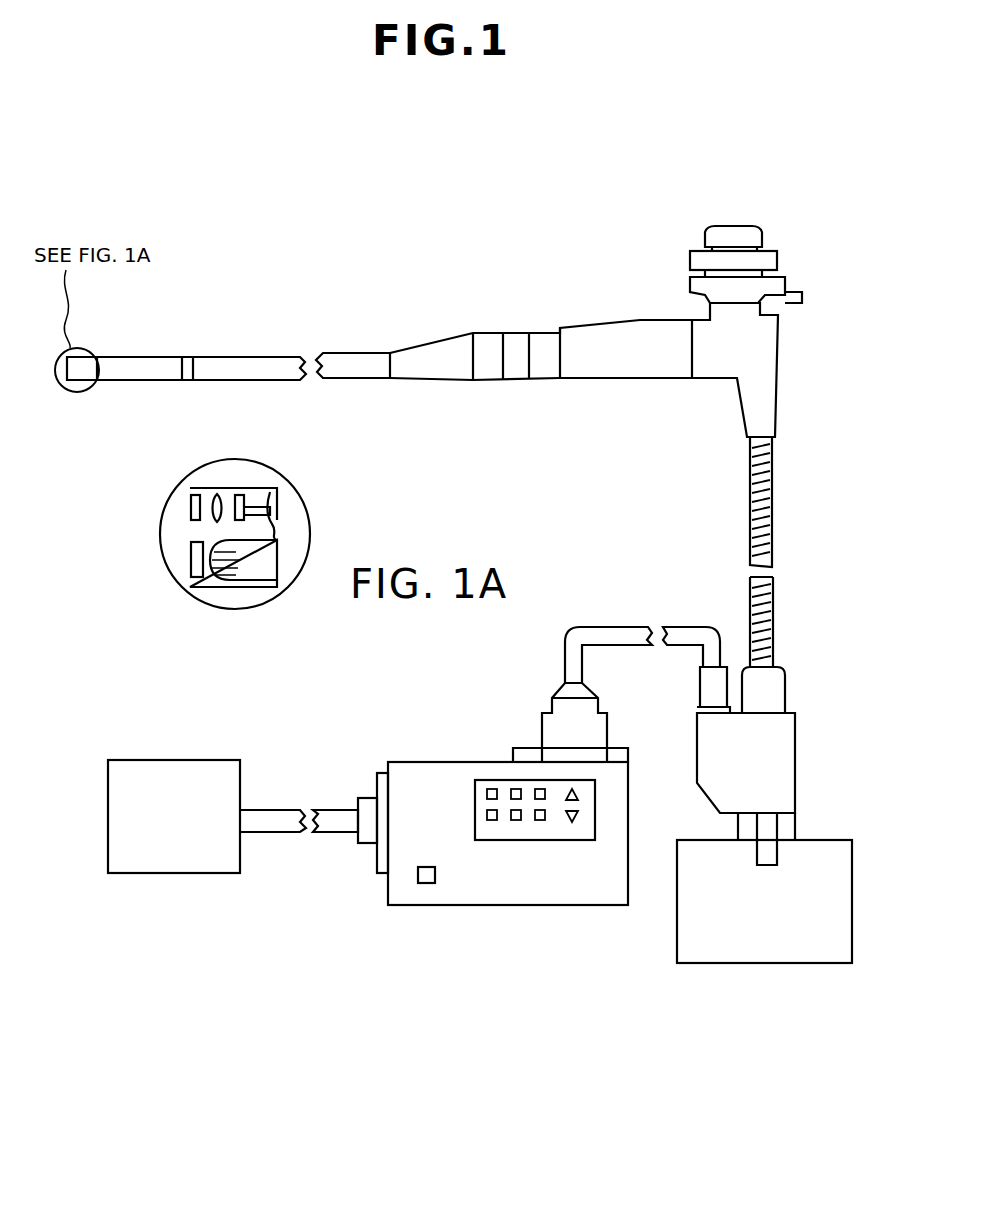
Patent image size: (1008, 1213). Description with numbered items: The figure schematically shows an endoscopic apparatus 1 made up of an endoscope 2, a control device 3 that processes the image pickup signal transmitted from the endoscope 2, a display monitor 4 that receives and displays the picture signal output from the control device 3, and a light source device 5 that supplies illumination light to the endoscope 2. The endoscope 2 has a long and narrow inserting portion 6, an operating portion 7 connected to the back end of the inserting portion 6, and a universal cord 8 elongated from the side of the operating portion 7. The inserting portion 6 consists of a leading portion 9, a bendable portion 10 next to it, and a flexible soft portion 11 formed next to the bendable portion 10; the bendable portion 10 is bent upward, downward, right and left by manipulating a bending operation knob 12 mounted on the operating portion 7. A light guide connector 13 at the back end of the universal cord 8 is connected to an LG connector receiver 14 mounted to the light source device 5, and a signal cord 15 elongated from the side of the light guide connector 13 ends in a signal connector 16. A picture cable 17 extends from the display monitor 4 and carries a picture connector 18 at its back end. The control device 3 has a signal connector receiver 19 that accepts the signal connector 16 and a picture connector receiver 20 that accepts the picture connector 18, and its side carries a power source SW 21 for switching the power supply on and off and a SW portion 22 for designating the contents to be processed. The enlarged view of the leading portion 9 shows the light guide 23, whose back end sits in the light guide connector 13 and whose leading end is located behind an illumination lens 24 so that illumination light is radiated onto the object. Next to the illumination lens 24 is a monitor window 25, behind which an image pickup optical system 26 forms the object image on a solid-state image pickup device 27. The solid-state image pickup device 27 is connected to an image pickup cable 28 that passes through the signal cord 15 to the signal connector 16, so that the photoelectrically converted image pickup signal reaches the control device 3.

In FIG. 1, the endoscopic apparatus 1 is at (460, 242).
In FIG. 1, the endoscope 2 is at (550, 333).
In FIG. 1, the control device 3 is at (458, 905).
In FIG. 1, the display monitor 4 is at (192, 760).
In FIG. 1, the light source device 5 is at (797, 965).
In FIG. 1, the inserting portion 6 is at (206, 355).
In FIG. 1, the operating portion 7 is at (706, 380).
In FIG. 1, the universal cord 8 is at (773, 500).
In FIG. 1, the leading portion 9 is at (73, 392).
In FIG. 1A, the leading portion 9 is at (253, 488).
In FIG. 1, the bendable portion 10 is at (133, 356).
In FIG. 1, the flexible soft portion 11 is at (283, 356).
In FIG. 1, the bending operation knob 12 is at (774, 246).
In FIG. 1, the light guide connector 13 is at (798, 746).
In FIG. 1, the LG connector receiver 14 is at (797, 825).
In FIG. 1, the signal cord 15 is at (628, 627).
In FIG. 1, the signal connector 16 is at (543, 725).
In FIG. 1, the picture cable 17 is at (268, 810).
In FIG. 1, the picture connector 18 is at (362, 800).
In FIG. 1, the signal connector receiver 19 is at (618, 748).
In FIG. 1, the picture connector receiver 20 is at (378, 858).
In FIG. 1, the power source SW 21 is at (426, 885).
In FIG. 1, the SW portion 22 is at (597, 808).
In FIG. 1A, the light guide 23 is at (258, 567).
In FIG. 1A, the illumination lens 24 is at (190, 566).
In FIG. 1A, the monitor window 25 is at (190, 500).
In FIG. 1A, the image pickup optical system 26 is at (217, 495).
In FIG. 1A, the solid-state image pickup device 27 is at (247, 514).
In FIG. 1A, the image pickup cable 28 is at (270, 493).